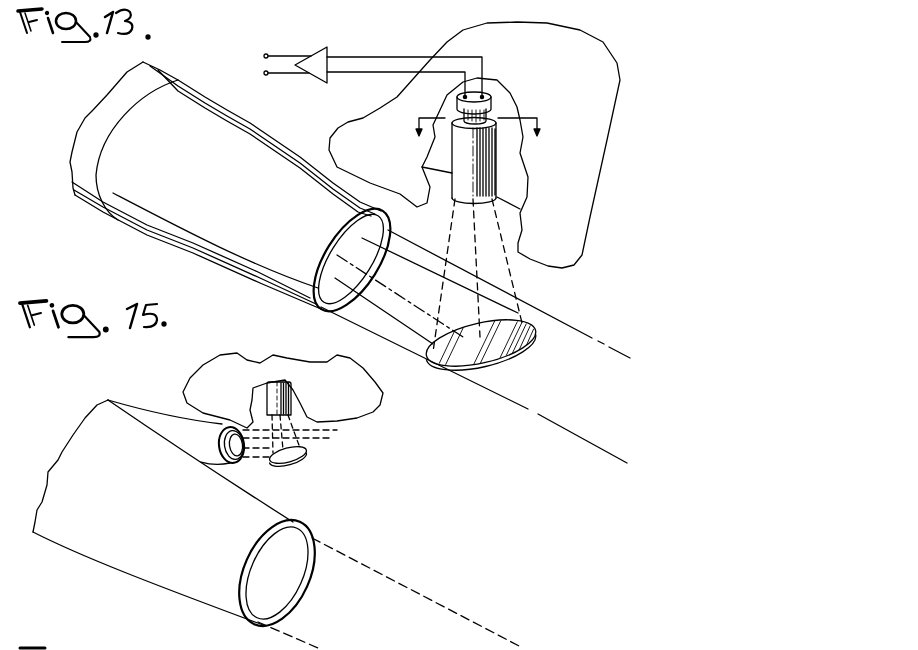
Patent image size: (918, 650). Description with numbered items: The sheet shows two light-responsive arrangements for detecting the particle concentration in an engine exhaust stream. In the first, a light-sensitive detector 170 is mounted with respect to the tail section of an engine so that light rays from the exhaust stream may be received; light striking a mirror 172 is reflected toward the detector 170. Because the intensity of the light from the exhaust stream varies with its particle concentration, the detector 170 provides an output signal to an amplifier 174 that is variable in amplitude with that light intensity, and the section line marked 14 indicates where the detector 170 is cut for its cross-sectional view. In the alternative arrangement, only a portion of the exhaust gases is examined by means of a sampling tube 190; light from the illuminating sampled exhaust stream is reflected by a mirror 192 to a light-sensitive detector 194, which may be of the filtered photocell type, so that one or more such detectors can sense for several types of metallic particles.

In FIG. 13, the section line of FIG. 14 is at (476, 140).
In FIG. 13, the light-sensitive detector 170 is at (498, 177).
In FIG. 13, the mirror 172 is at (527, 353).
In FIG. 13, the amplifier 174 is at (327, 47).
In FIG. 15, the sampling tube 190 is at (162, 421).
In FIG. 15, the mirror 192 is at (296, 464).
In FIG. 15, the light-sensitive detector 194 is at (279, 405).